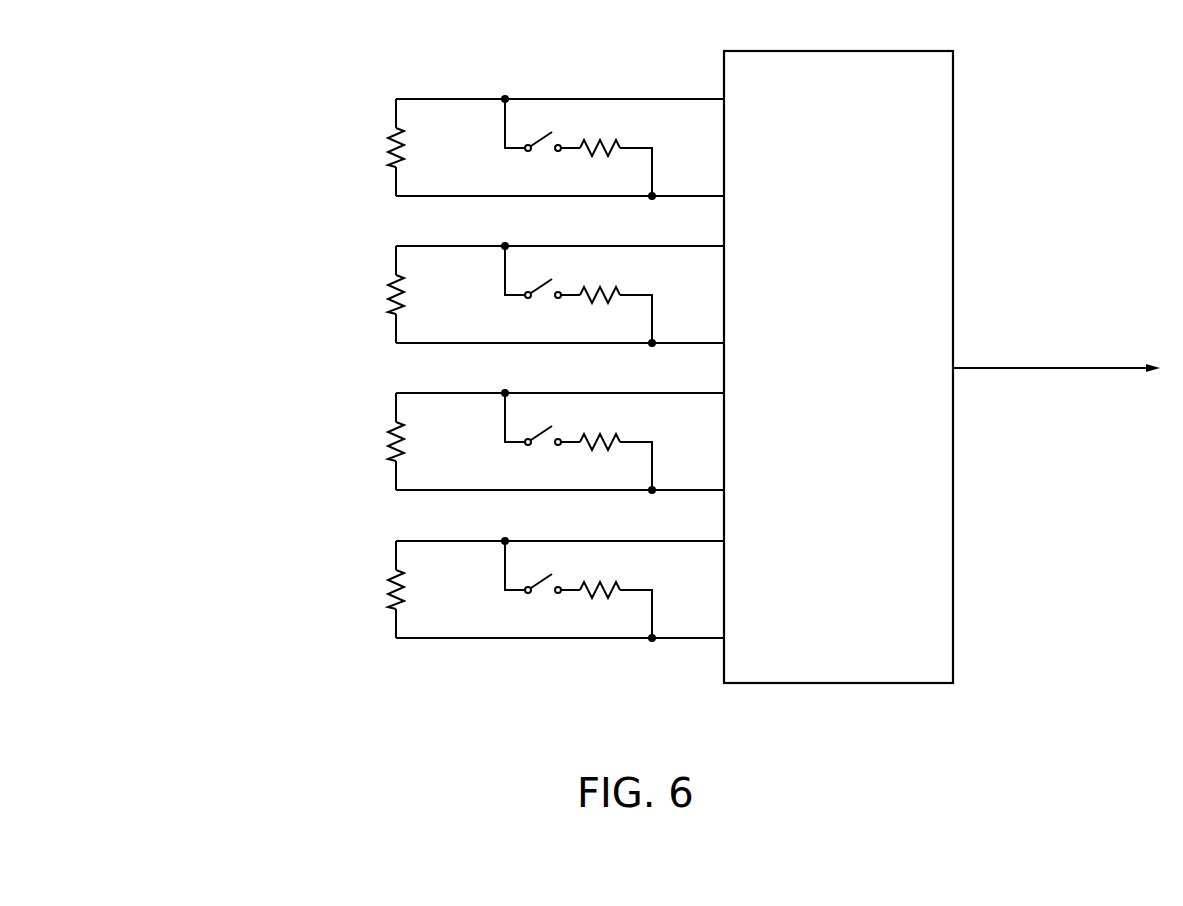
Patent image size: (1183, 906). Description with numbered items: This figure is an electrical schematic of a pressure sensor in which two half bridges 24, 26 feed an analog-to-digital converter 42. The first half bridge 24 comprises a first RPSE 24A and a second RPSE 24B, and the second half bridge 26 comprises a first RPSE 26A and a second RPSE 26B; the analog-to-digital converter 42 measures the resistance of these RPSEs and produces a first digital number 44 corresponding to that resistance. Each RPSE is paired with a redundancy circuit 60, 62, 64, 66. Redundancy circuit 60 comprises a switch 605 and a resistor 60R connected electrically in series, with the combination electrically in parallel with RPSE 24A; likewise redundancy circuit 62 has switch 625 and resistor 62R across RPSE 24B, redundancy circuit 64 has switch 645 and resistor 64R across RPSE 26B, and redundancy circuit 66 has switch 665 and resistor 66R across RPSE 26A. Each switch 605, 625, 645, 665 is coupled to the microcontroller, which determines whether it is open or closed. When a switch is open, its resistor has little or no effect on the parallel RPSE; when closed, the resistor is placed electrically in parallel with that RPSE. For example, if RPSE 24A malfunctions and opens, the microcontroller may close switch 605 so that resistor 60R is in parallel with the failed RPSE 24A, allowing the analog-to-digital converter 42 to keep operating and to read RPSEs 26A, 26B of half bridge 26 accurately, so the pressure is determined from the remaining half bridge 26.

The half bridge 24 is at (255, 100).
The first RPSE 24A is at (374, 148).
The second RPSE 24B is at (374, 295).
The half bridge 26 is at (255, 393).
The first RPSE 26A is at (374, 590).
The second RPSE 26B is at (374, 442).
The analog-to-digital converter 42 is at (953, 102).
The first digital number 44 is at (1057, 371).
The redundancy circuit 60 is at (596, 150).
The switch 605 is at (527, 130).
The resistor 60R is at (635, 133).
The redundancy circuit 62 is at (596, 297).
The switch 625 is at (527, 277).
The resistor 62R is at (635, 280).
The redundancy circuit 64 is at (596, 444).
The switch 645 is at (527, 424).
The resistor 64R is at (635, 427).
The redundancy circuit 66 is at (596, 592).
The switch 665 is at (527, 572).
The resistor 66R is at (635, 575).